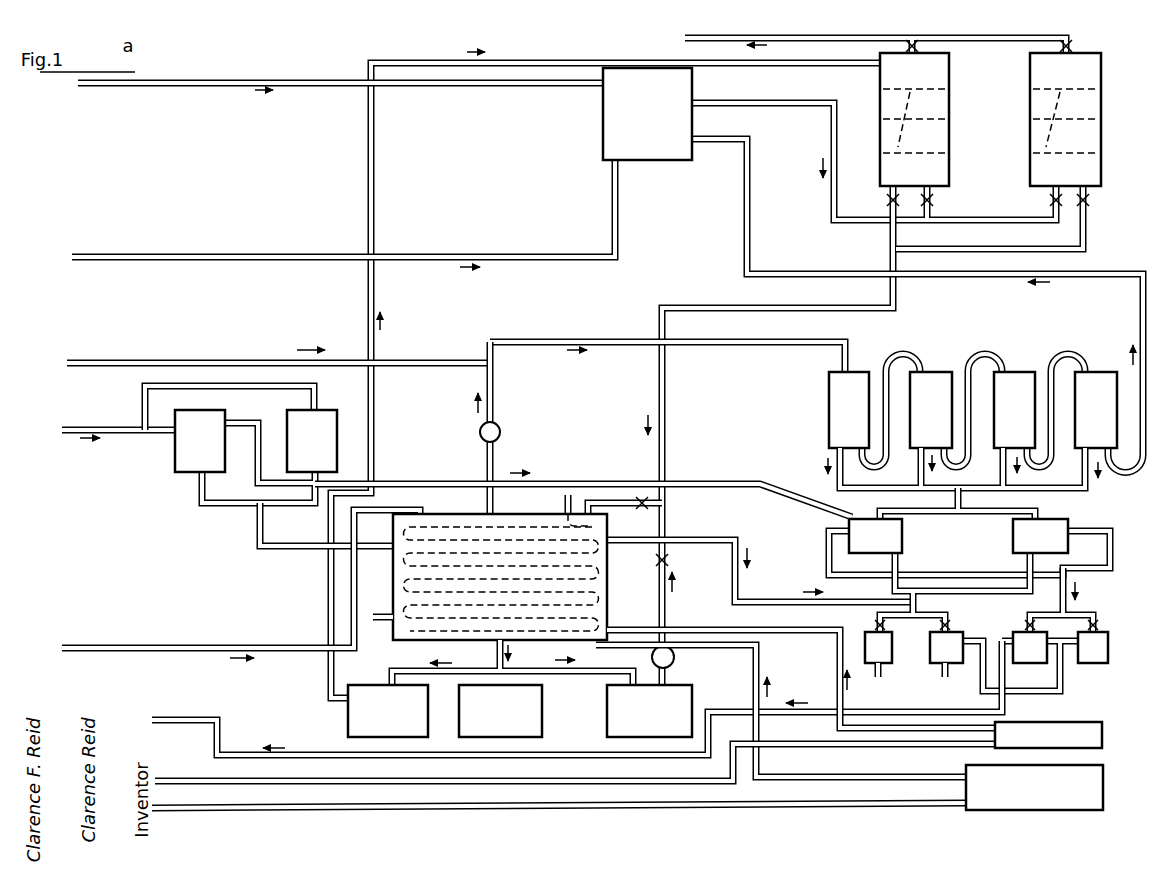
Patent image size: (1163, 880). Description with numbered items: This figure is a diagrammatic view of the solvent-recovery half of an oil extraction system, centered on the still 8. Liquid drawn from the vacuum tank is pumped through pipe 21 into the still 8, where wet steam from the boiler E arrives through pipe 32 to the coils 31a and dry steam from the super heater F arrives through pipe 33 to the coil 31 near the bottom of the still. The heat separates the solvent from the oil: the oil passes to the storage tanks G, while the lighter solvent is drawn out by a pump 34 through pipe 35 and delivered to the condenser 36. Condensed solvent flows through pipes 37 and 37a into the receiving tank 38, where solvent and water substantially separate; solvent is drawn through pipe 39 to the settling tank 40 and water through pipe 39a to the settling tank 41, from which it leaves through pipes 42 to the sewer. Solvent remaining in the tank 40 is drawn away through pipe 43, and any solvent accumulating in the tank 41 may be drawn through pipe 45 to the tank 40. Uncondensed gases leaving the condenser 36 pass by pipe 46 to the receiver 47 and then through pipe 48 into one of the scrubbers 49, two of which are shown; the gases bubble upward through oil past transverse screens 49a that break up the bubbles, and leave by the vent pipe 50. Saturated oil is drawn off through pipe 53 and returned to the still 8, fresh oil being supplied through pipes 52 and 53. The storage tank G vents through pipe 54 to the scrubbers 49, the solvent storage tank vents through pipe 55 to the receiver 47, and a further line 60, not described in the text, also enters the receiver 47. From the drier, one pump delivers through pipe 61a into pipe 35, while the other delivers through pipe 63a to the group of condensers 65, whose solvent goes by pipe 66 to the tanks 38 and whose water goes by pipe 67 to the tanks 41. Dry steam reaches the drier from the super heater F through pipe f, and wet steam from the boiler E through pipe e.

The boiler 8 is at (393, 578).
The pipe 21 is at (250, 647).
The coil 31 is at (597, 573).
The coils 31a is at (394, 632).
The pipe 32 is at (760, 662).
The pipe 33 is at (695, 628).
The pump 34 is at (500, 432).
The pipe 35 is at (580, 339).
The condenser 36 is at (972, 416).
The pipe 37 is at (1090, 491).
The pipe 37a is at (957, 511).
The receiving tank 38 is at (958, 536).
The pipe 39 is at (930, 575).
The pipe 39a is at (986, 592).
The settling tank 40 is at (1060, 647).
The settling tank 41 is at (914, 654).
The pipes 42 is at (940, 675).
The pipe 43 is at (912, 710).
The pipe 45 is at (1063, 688).
The pipe 46 is at (751, 200).
The receiver 47 is at (647, 114).
The pipe 48 is at (778, 104).
The scrubbers 49 is at (1030, 122).
The screens 49a is at (976, 116).
The vent pipe 50 is at (968, 40).
The pipe 52 is at (898, 308).
The pipe 53 is at (1090, 248).
The vent pipe 54 is at (622, 62).
The vent pipe 55 is at (262, 253).
The pipe 60 is at (288, 82).
The pipe 61a is at (100, 362).
The pipe 63a is at (86, 428).
The condensers 65 is at (241, 444).
The pipe 66 is at (425, 482).
The pipe 67 is at (282, 545).
The storage tanks G is at (520, 688).
The super heater F is at (1048, 735).
The boiler E is at (1034, 787).
The pipe f is at (190, 781).
The pipe e is at (225, 807).